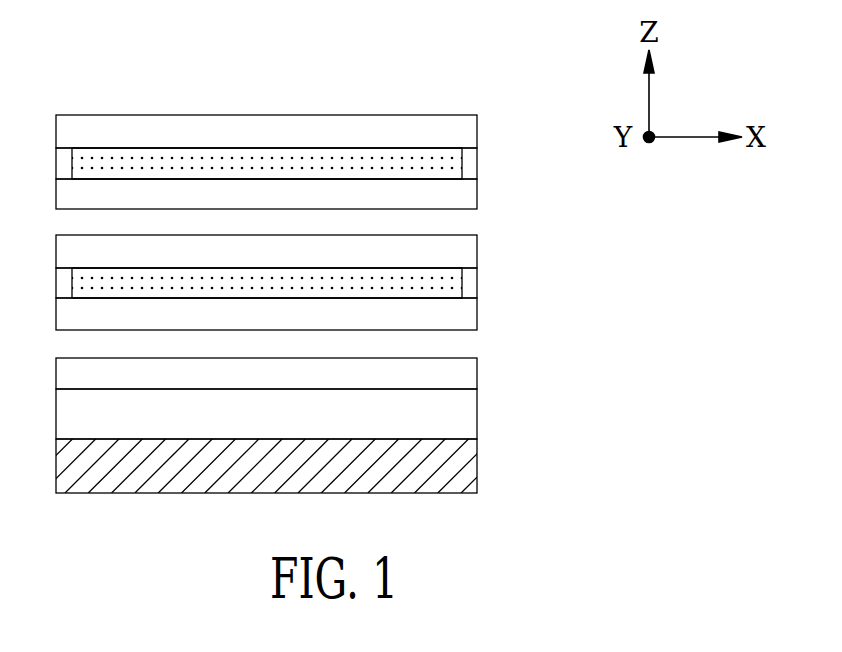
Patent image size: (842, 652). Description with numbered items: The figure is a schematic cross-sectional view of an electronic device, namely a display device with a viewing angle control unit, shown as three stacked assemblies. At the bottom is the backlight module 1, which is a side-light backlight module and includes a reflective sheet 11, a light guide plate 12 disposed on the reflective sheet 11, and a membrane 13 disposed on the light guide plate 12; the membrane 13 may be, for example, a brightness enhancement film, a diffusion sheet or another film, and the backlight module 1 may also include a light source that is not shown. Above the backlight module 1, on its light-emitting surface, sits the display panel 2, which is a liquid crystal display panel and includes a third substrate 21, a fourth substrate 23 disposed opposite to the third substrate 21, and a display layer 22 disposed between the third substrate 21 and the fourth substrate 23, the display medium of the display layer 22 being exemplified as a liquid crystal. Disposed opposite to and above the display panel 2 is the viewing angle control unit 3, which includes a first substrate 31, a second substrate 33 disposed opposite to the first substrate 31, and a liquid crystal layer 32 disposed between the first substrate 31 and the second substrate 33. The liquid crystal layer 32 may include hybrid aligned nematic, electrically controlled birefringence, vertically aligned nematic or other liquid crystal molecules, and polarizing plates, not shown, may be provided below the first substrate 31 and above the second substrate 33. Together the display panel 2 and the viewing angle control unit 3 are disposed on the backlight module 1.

The backlight module 1 is at (296, 422).
The reflective sheet 11 is at (281, 466).
The light guide plate 12 is at (468, 418).
The membrane 13 is at (468, 371).
The display panel 2 is at (316, 285).
The third substrate 21 is at (301, 317).
The display layer 22 is at (458, 285).
The fourth substrate 23 is at (468, 253).
The viewing angle control unit 3 is at (316, 164).
The first substrate 31 is at (301, 197).
The liquid crystal layer 32 is at (458, 161).
The second substrate 33 is at (468, 130).